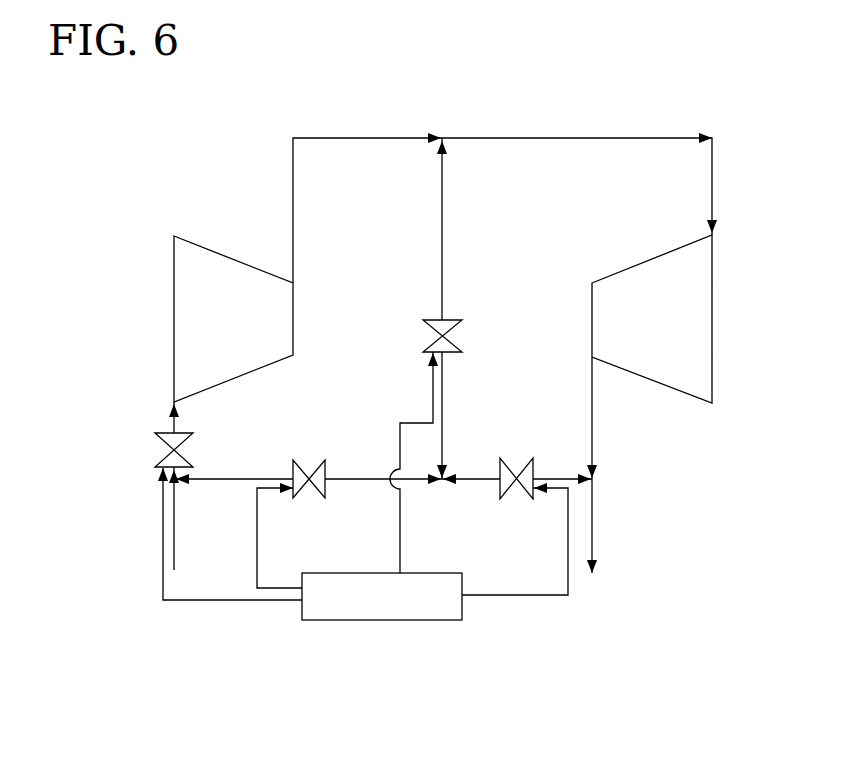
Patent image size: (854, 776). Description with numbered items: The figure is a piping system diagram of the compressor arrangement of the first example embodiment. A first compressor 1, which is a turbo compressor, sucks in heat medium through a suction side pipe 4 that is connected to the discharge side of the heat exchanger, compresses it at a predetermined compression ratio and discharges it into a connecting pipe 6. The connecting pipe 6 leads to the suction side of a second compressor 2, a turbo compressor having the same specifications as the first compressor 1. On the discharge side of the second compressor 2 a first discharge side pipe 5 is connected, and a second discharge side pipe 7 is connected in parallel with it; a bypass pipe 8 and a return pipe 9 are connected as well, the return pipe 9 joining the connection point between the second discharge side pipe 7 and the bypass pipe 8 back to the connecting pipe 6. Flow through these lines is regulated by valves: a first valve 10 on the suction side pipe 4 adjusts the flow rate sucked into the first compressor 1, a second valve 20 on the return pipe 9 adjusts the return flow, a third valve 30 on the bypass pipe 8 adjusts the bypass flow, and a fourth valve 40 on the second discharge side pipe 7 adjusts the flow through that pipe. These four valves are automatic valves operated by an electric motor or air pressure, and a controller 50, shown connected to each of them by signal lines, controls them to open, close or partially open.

The first compressor 1 is at (172, 318).
The second compressor 2 is at (712, 318).
The suction side pipe 4 is at (177, 532).
The first discharge side pipe 5 is at (594, 515).
The connecting pipe 6 is at (566, 135).
The second discharge side pipe 7 is at (483, 485).
The bypass pipe 8 is at (364, 485).
The return pipe 9 is at (444, 237).
The first valve 10 is at (163, 457).
The second valve 20 is at (452, 340).
The third valve 30 is at (312, 460).
The fourth valve 40 is at (520, 458).
The controller 50 is at (430, 622).